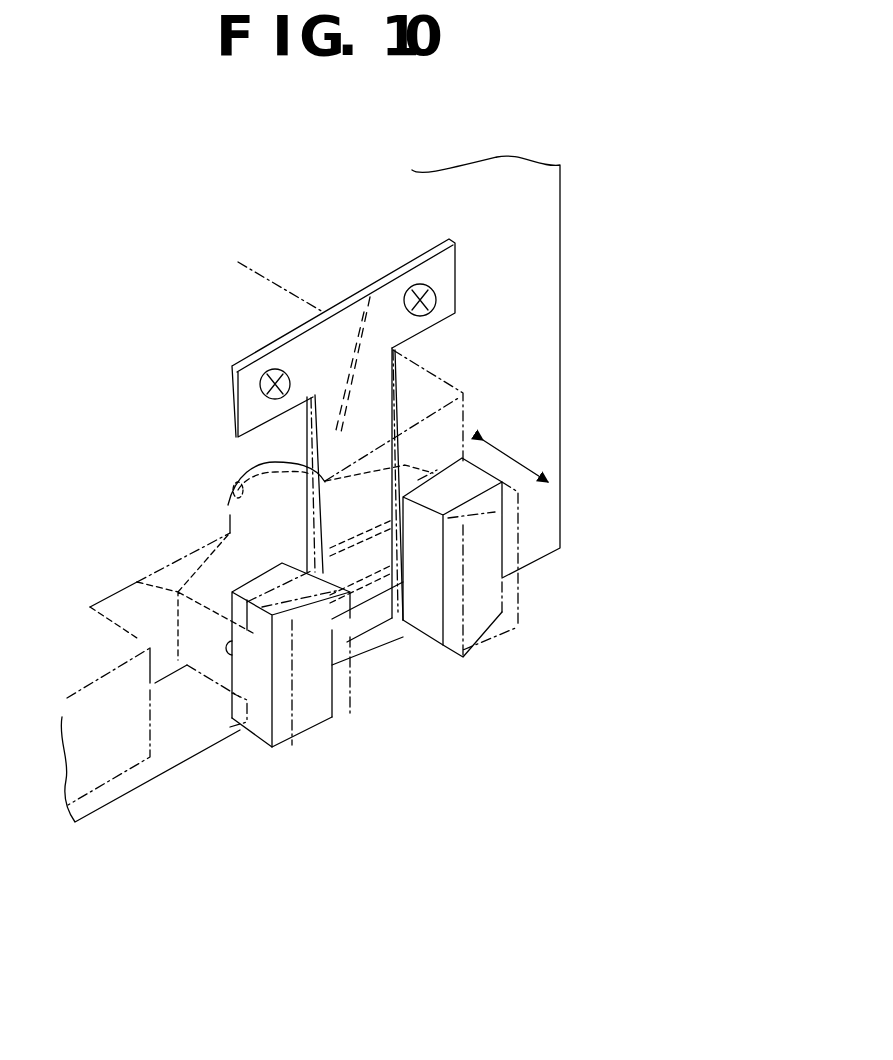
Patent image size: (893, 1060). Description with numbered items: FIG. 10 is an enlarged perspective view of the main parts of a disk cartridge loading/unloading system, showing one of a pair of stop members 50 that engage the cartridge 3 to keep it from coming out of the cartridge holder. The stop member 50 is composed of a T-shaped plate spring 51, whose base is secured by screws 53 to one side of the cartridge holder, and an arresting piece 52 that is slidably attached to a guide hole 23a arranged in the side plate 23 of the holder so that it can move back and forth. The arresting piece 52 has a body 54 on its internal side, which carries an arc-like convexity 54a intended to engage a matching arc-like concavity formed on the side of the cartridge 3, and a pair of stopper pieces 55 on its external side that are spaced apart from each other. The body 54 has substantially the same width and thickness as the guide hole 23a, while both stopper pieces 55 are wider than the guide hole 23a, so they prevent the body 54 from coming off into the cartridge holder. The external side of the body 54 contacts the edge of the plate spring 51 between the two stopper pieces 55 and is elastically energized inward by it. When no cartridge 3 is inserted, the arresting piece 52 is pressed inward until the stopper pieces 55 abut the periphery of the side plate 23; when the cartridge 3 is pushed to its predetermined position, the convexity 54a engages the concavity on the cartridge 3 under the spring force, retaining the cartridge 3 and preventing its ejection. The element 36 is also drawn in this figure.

The cartridge 3 is at (98, 793).
The side plate 23 is at (560, 352).
The guide hole 23a is at (226, 655).
The guide member 36 is at (228, 505).
The stop member 50 is at (462, 682).
The plate spring 51 is at (232, 412).
The arresting piece 52 is at (263, 762).
The screws 53 is at (413, 287).
The body 54 is at (137, 582).
The arc-like convexity 54a is at (230, 515).
The stopper pieces 55 is at (310, 733).